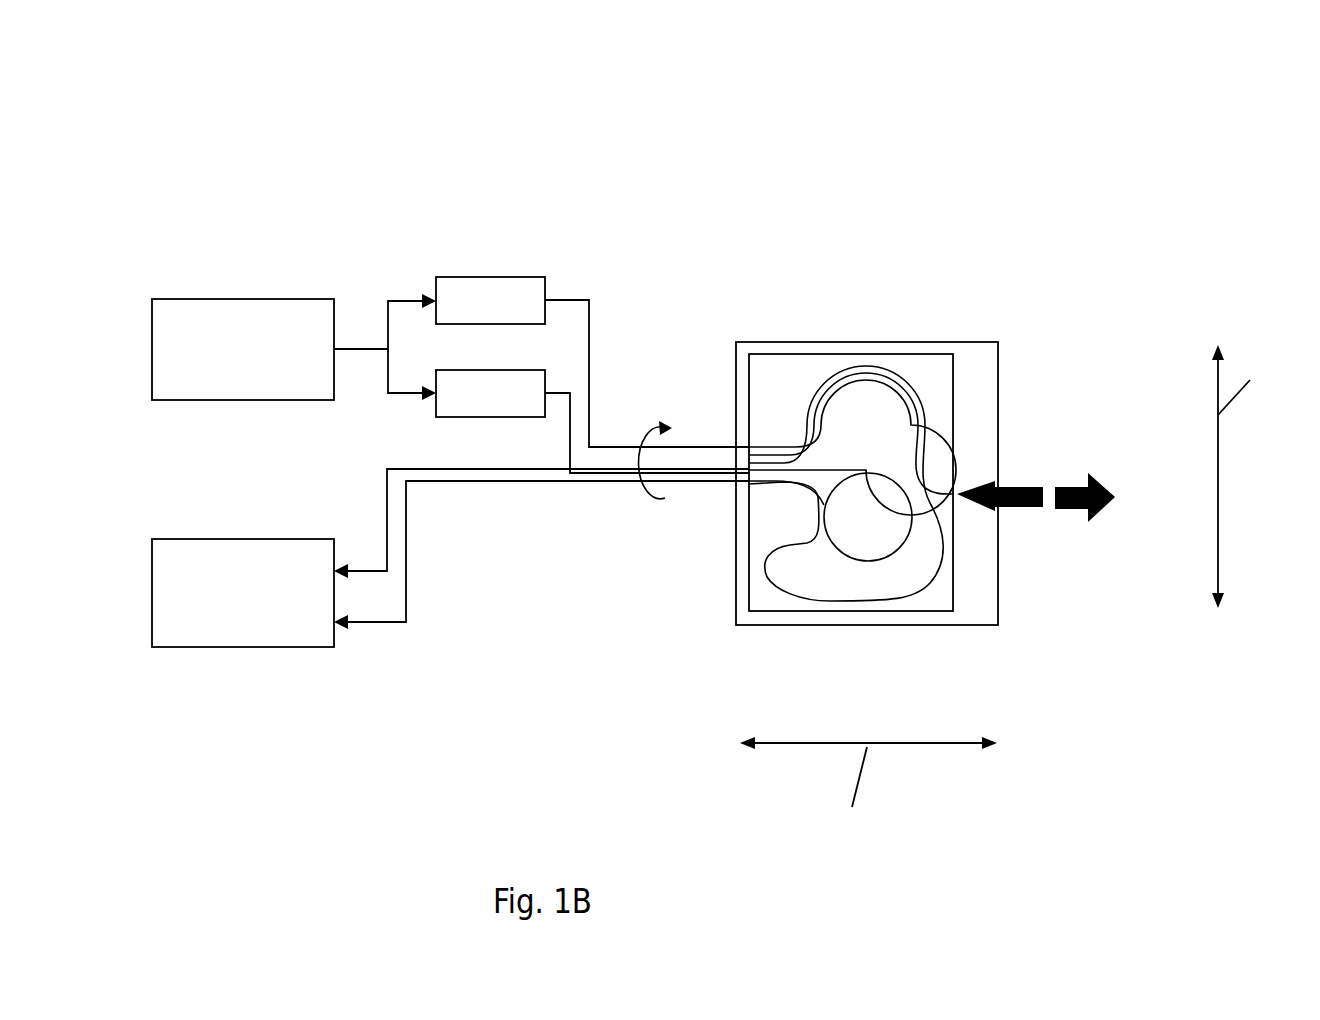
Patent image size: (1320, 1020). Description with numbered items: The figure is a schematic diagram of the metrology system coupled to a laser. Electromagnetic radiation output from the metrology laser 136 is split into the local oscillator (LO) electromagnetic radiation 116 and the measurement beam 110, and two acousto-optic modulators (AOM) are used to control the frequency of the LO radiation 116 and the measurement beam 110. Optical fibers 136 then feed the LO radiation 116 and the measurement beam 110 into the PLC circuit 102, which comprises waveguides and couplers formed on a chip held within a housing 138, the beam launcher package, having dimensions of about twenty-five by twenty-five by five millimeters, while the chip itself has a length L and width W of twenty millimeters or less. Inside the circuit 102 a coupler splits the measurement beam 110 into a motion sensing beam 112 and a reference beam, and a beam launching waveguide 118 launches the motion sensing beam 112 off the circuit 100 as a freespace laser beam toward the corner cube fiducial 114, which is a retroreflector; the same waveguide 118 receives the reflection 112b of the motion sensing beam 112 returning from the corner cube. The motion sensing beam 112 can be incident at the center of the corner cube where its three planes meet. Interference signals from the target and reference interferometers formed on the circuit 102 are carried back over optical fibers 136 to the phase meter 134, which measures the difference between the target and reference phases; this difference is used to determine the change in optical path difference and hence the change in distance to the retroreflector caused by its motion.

The circuit 100 is at (781, 146).
The PLC circuit 102 is at (852, 427).
The measurement beam 110 is at (590, 325).
The motion sensing beam 112 is at (1013, 487).
The reflection of the motion sensing beam 112b is at (1068, 485).
The fiducial 114 is at (1115, 581).
The local oscillator (LO) beam 116 is at (573, 425).
The beam launching waveguide 118 is at (903, 353).
The phase meter 134 is at (243, 593).
The metrology laser 136 is at (508, 461).
The housing 138 is at (852, 622).